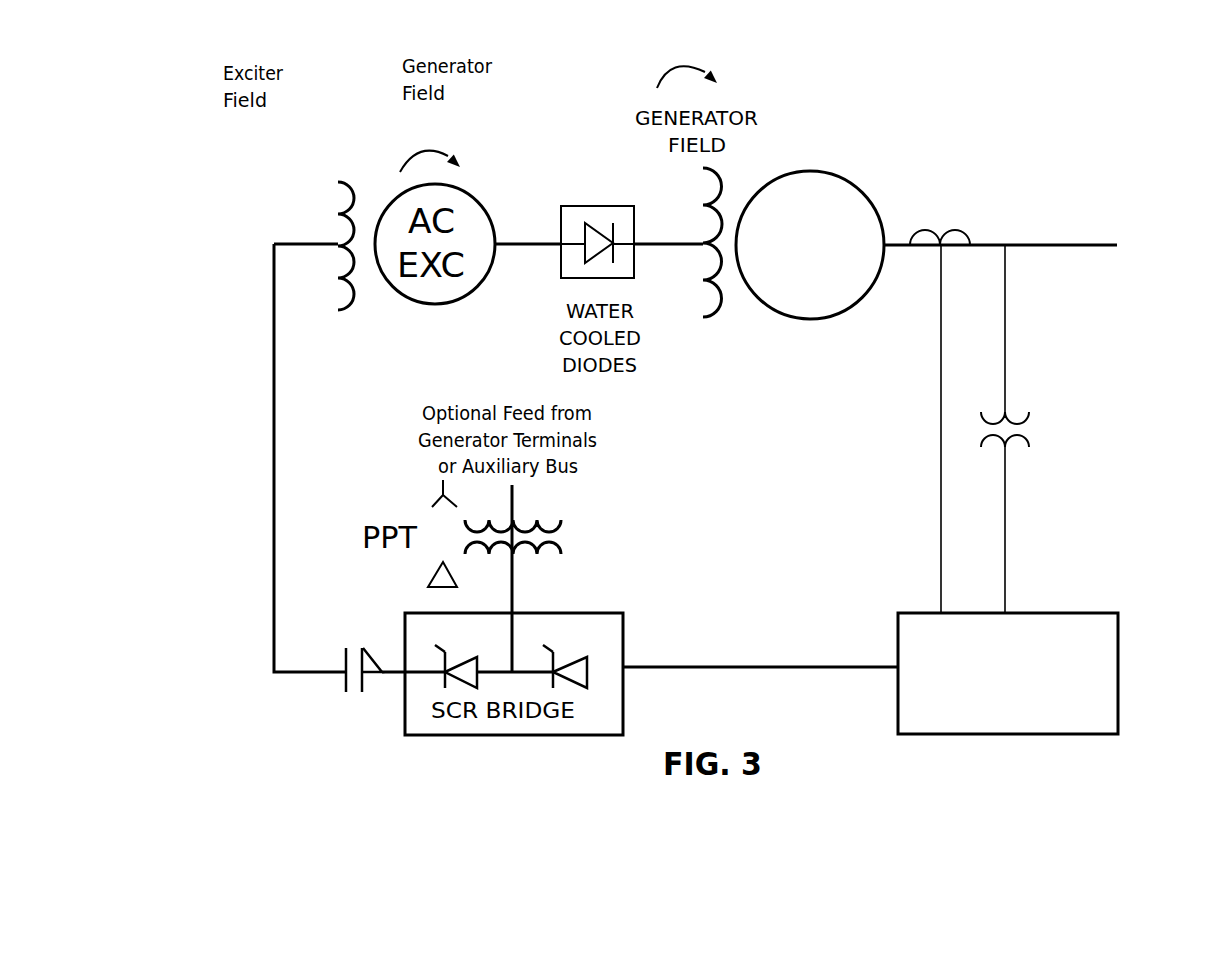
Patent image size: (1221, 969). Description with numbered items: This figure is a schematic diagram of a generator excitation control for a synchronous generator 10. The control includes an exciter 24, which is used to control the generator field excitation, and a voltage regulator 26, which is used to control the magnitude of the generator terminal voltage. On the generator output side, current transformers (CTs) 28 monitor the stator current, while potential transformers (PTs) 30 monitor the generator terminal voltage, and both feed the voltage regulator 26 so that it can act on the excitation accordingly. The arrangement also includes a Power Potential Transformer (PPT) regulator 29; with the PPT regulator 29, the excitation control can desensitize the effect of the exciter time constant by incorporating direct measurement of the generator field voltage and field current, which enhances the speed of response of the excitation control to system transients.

The synchronous generator 10 is at (862, 126).
The exciter 24 is at (245, 200).
The voltage regulator 26 is at (1100, 632).
The current transformers (CTs) 28 is at (978, 185).
The Power Potential Transformer (PPT) regulator 29 is at (598, 531).
The potential transformers (PTs) 30 is at (1037, 385).